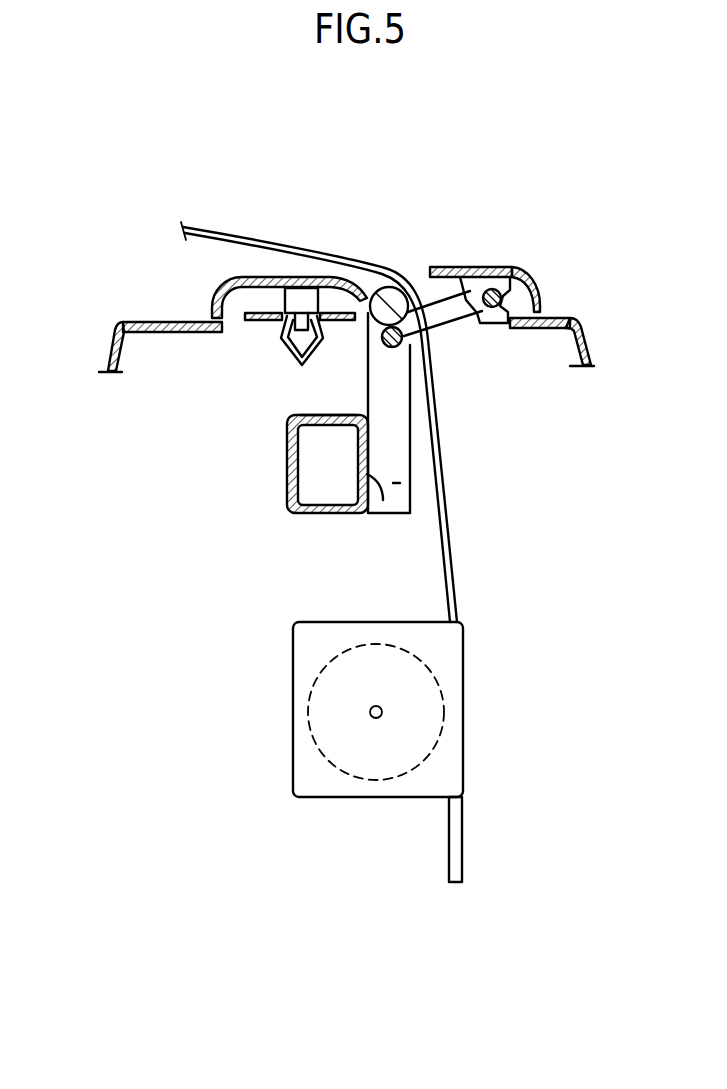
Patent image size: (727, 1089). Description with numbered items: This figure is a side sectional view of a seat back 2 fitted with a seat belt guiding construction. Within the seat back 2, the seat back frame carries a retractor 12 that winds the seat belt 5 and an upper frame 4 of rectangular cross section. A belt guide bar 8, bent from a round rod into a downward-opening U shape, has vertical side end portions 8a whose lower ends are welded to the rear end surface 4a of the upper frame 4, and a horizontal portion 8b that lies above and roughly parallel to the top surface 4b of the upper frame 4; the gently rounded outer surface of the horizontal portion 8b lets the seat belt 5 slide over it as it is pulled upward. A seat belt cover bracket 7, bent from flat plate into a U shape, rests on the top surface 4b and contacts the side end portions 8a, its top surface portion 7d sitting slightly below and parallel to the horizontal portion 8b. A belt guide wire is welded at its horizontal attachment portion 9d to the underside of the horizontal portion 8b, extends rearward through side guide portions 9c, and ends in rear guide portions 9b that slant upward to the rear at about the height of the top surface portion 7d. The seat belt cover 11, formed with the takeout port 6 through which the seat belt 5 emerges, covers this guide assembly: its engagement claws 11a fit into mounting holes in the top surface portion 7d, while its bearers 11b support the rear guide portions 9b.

The seat back 2 is at (108, 360).
The upper frame 4 is at (287, 492).
The rear end surface 4a is at (383, 500).
The top surface 4b is at (300, 415).
The seat belt 5 is at (456, 560).
The takeout port 6 is at (407, 267).
The seat belt cover bracket 7 is at (252, 325).
The top surface portion 7d is at (263, 312).
The belt guide bar 8 is at (411, 418).
The side end portions 8a is at (393, 483).
The horizontal portion 8b is at (389, 287).
The rear guide portion 9b is at (533, 281).
The side guide portion 9c is at (463, 333).
The horizontal attachment portion 9d is at (396, 348).
The seat belt cover 11 is at (481, 267).
The engagement claw 11a is at (287, 352).
The bearer 11b is at (496, 324).
The retractor 12 is at (293, 702).